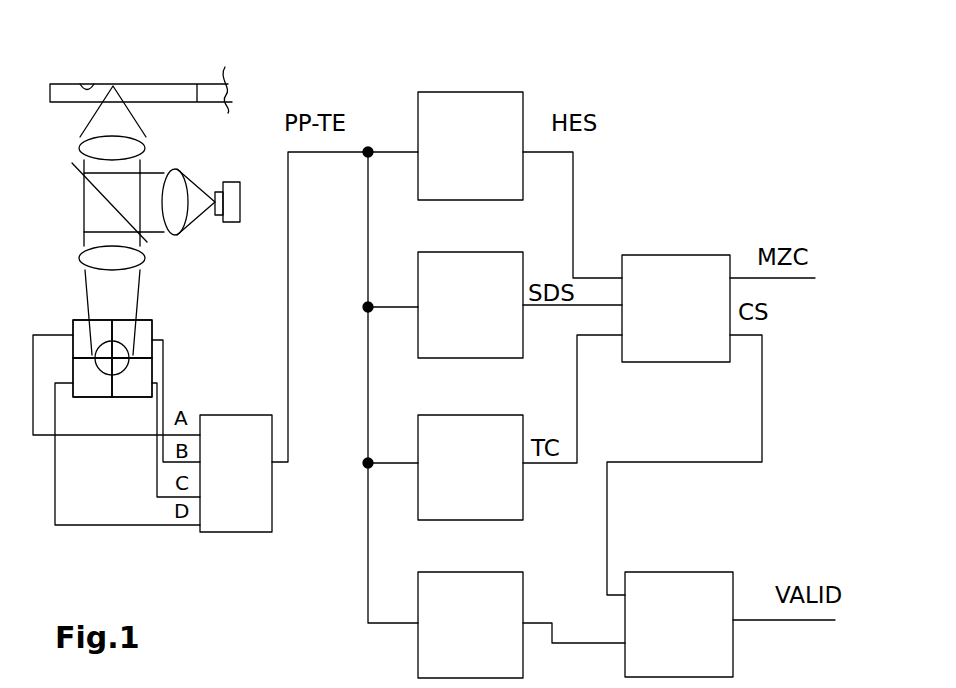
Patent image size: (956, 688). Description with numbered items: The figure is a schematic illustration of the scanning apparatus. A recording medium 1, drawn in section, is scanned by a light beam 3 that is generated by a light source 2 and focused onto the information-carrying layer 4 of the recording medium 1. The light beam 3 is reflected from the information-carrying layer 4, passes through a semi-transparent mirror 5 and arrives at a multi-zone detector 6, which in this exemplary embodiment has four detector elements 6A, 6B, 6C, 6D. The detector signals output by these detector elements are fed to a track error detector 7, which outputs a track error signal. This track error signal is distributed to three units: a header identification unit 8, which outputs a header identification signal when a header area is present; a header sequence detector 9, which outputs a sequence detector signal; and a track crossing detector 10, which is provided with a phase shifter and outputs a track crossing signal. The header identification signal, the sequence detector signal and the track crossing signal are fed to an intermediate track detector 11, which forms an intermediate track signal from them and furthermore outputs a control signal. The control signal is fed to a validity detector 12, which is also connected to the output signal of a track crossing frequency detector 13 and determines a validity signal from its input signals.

The recording medium 1 is at (158, 92).
The light source 2 is at (236, 222).
The light beam 3 is at (123, 127).
The information-carrying layer 4 is at (78, 84).
The semi-transparent mirror 5 is at (102, 202).
The multi-zone detector 6 is at (80, 313).
The detector element 6A is at (82, 335).
The detector element 6B is at (143, 327).
The detector element 6C is at (132, 383).
The detector element 6D is at (90, 383).
The track error detector 7 is at (243, 507).
The header identification unit 8 is at (492, 105).
The header sequence detector 9 is at (508, 270).
The track crossing detector 10 is at (487, 425).
The intermediate track detector 11 is at (683, 270).
The validity detector 12 is at (715, 577).
The track crossing frequency detector 13 is at (513, 602).